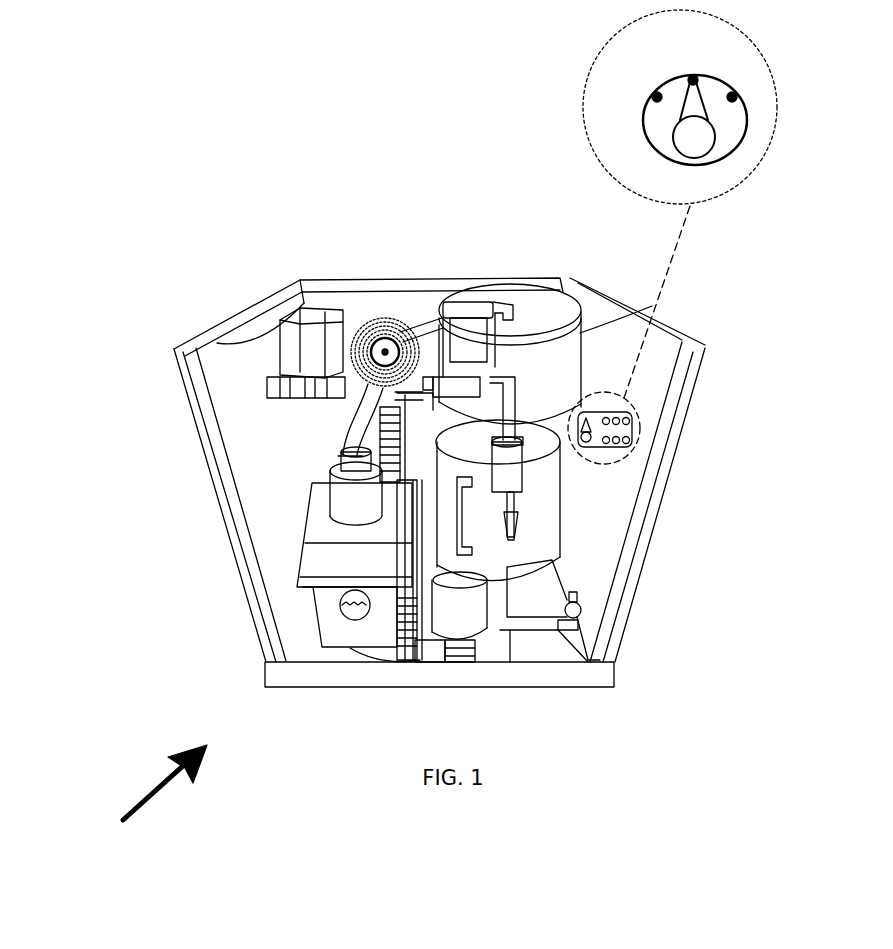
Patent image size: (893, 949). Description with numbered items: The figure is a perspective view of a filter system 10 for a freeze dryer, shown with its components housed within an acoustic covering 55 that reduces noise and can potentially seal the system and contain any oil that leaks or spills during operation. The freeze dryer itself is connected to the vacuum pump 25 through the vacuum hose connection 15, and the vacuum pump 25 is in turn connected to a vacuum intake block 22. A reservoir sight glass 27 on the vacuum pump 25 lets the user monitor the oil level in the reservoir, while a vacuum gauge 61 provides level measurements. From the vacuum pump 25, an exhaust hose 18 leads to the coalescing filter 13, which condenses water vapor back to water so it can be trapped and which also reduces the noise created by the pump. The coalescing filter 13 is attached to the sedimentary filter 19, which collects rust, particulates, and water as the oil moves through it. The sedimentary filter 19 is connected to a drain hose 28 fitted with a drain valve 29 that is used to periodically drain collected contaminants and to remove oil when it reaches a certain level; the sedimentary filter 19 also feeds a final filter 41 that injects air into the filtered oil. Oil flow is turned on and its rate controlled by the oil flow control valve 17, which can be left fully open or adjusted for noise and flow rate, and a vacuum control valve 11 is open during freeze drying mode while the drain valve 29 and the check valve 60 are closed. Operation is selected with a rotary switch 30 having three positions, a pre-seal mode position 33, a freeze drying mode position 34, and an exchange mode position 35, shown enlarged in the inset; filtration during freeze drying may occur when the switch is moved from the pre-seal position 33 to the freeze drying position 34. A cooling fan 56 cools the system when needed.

The filter system 10 is at (157, 796).
The vacuum control valve 11 is at (217, 343).
The coalescing filter 13 is at (606, 396).
The vacuum hose connection 15 is at (268, 386).
The oil flow control valve 17 is at (473, 302).
The exhaust hose 18 is at (352, 424).
The sedimentary filter 19 is at (555, 513).
The vacuum intake block 22 is at (335, 472).
The vacuum pump 25 is at (315, 530).
The reservoir sight glass 27 is at (343, 612).
The drain hose 28 is at (513, 662).
The drain valve 29 is at (577, 623).
The rotary switch 30 is at (596, 403).
The pre-seal mode position 33 is at (654, 96).
The freeze drying mode position 34 is at (695, 77).
The exchange mode position 35 is at (735, 97).
The final filter 41 is at (560, 490).
The acoustic covering 55 is at (690, 372).
The cooling fan 56 is at (408, 315).
The check valve 60 is at (418, 660).
The vacuum gauge 61 is at (387, 340).